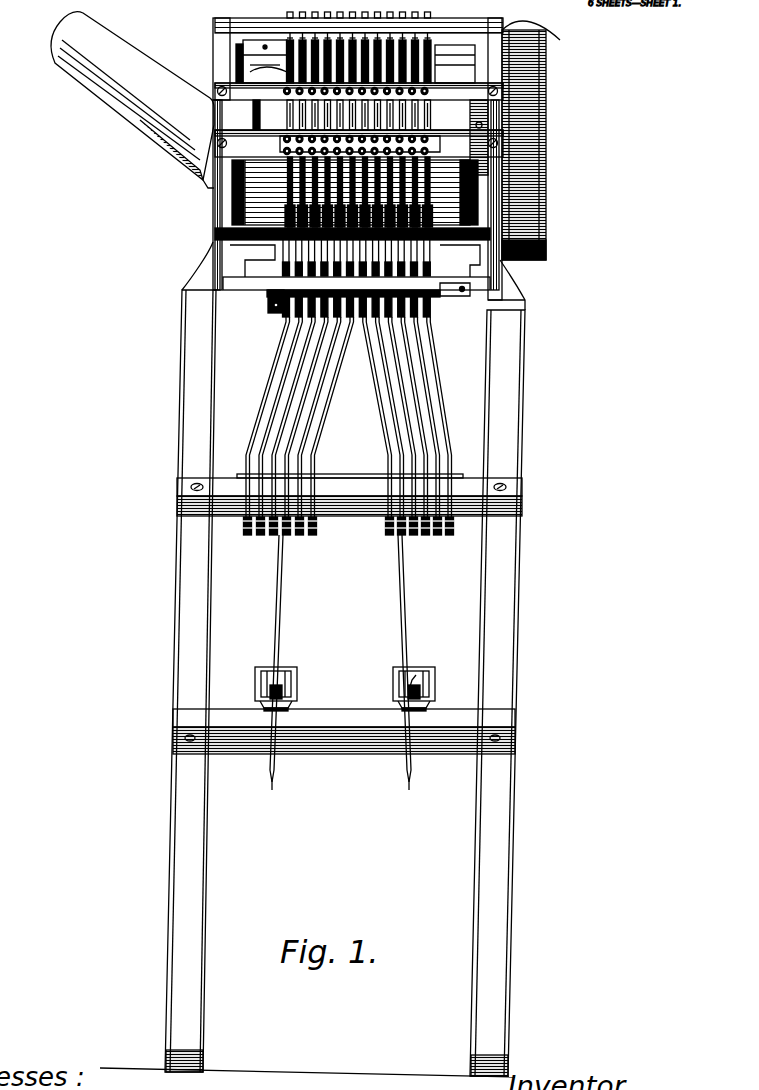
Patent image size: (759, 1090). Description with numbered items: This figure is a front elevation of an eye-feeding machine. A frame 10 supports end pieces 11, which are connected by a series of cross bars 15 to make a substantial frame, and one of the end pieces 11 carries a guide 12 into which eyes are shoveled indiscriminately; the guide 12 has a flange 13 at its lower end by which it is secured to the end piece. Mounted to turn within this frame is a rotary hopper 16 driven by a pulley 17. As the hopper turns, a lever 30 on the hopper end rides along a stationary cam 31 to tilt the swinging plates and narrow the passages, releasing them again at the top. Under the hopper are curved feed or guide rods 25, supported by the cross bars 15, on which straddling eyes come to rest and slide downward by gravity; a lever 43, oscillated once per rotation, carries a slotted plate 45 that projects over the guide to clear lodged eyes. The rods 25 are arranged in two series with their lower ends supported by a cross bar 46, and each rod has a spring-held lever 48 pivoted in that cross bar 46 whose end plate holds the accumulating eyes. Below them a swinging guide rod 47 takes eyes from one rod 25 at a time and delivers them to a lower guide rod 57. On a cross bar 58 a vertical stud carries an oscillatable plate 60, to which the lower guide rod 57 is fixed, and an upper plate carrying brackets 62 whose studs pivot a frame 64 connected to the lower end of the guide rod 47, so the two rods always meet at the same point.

The frame 10 is at (182, 566).
The end pieces 11 is at (210, 214).
The guide 12 is at (108, 96).
The flange 13 is at (212, 184).
The cross bars 15 is at (483, 140).
The rotary hopper 16 is at (258, 45).
The pulley 17 is at (547, 116).
The feed or guide rods 25 is at (448, 368).
The lever 30 is at (238, 64).
The stationary cam 31 is at (243, 122).
The lever 43 is at (445, 262).
The slotted plate 45 is at (270, 302).
The cross bar 46 is at (496, 490).
The swinging guide rods 47 is at (283, 623).
The lever 48 is at (308, 530).
The lower guide rods 57 is at (280, 778).
The cross bar 58 is at (503, 724).
The oscillatable plate 60 is at (428, 702).
The brackets 62 is at (297, 688).
The frame 64 is at (417, 677).